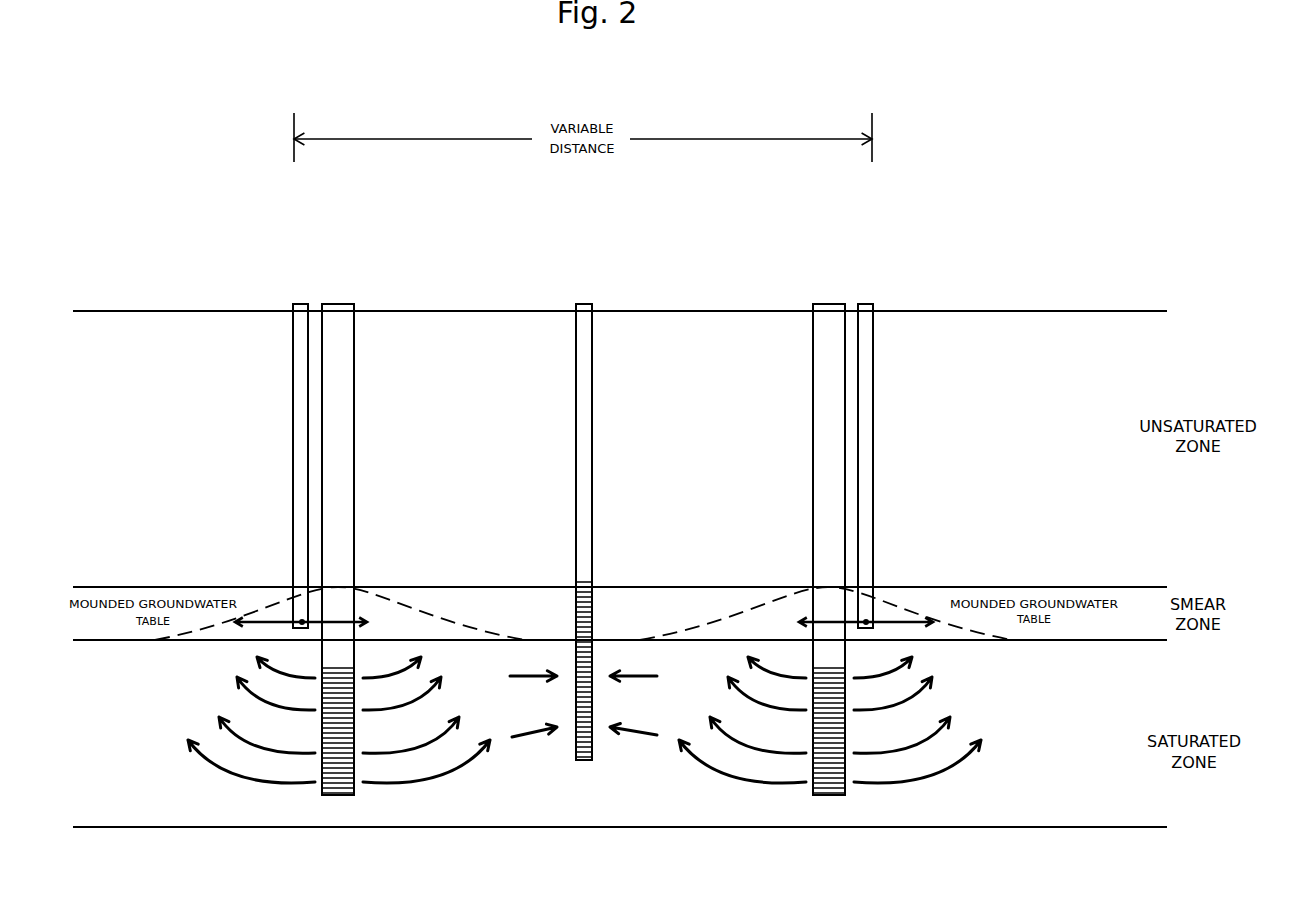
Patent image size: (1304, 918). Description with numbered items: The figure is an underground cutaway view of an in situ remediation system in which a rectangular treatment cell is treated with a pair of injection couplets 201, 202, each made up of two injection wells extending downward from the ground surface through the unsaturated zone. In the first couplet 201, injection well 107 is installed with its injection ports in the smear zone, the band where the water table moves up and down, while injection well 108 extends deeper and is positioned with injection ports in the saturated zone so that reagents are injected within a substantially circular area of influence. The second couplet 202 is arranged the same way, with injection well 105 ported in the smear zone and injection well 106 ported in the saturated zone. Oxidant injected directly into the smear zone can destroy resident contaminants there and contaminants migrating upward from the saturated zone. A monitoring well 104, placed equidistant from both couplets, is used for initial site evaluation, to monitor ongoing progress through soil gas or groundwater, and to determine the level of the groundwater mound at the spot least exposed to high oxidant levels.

The monitoring well 104 is at (585, 300).
The injection well 105 is at (865, 300).
The injection well 106 is at (820, 300).
The injection well 107 is at (298, 300).
The injection well 108 is at (347, 300).
The first well pair 201 is at (337, 272).
The second well pair 202 is at (867, 272).